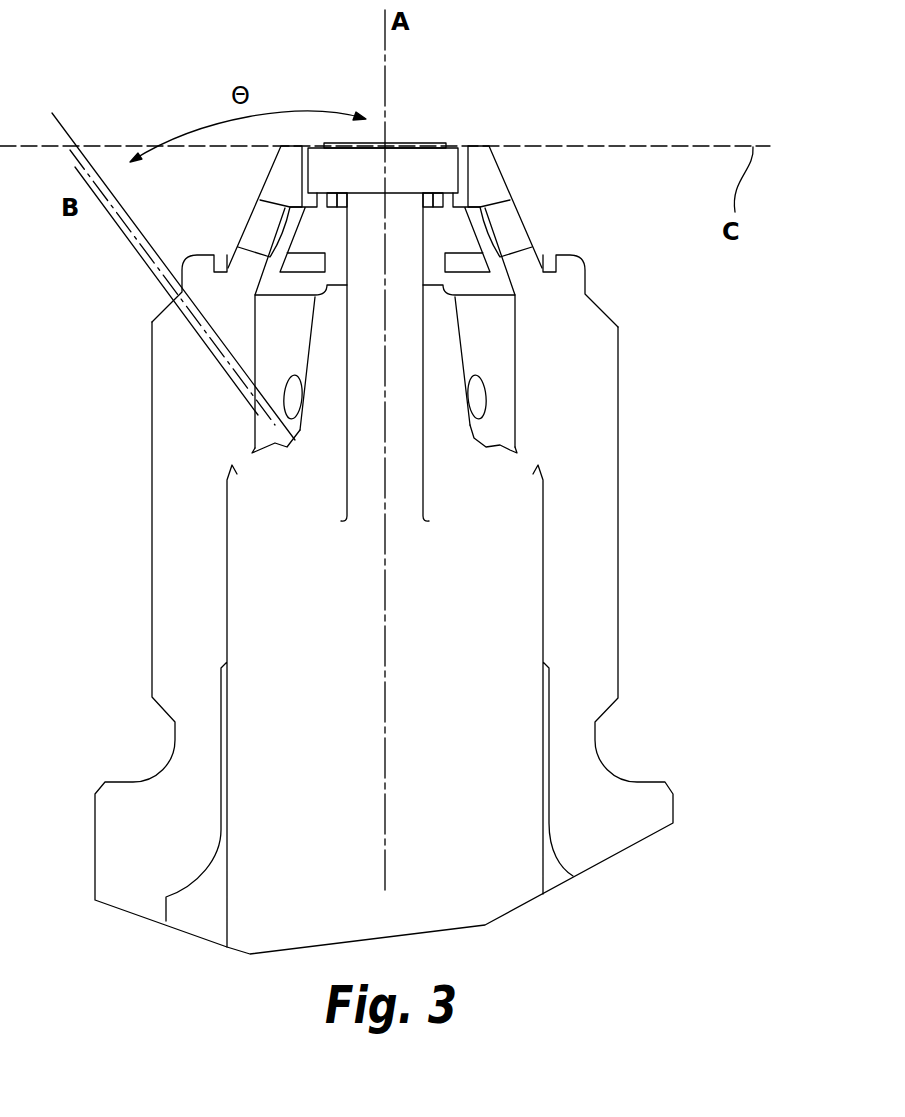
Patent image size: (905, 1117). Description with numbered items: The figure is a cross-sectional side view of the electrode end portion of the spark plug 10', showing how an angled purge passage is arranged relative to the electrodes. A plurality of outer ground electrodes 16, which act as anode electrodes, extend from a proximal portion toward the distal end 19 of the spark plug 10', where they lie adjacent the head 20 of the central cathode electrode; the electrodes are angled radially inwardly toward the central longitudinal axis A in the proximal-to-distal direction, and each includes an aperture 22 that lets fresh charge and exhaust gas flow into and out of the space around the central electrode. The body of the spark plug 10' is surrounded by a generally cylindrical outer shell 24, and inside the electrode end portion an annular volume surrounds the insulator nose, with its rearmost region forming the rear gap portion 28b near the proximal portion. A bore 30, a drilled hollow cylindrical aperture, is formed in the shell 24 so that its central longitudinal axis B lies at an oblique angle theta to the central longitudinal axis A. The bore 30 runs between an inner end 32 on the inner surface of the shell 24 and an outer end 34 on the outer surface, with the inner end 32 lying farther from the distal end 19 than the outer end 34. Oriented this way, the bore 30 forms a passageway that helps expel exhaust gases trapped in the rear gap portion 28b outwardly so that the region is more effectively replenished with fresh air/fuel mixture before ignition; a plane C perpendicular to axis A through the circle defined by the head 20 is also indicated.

The spark plug 10' is at (385, 131).
The outer ground electrodes 16 is at (480, 157).
The distal end 19 is at (413, 145).
The head 20 is at (395, 163).
The aperture 22 is at (505, 227).
The outer shell 24 is at (211, 258).
The rear gap portion 28b is at (493, 431).
The bore 30 is at (200, 352).
The inner end 32 is at (256, 395).
The outer end 34 is at (182, 294).